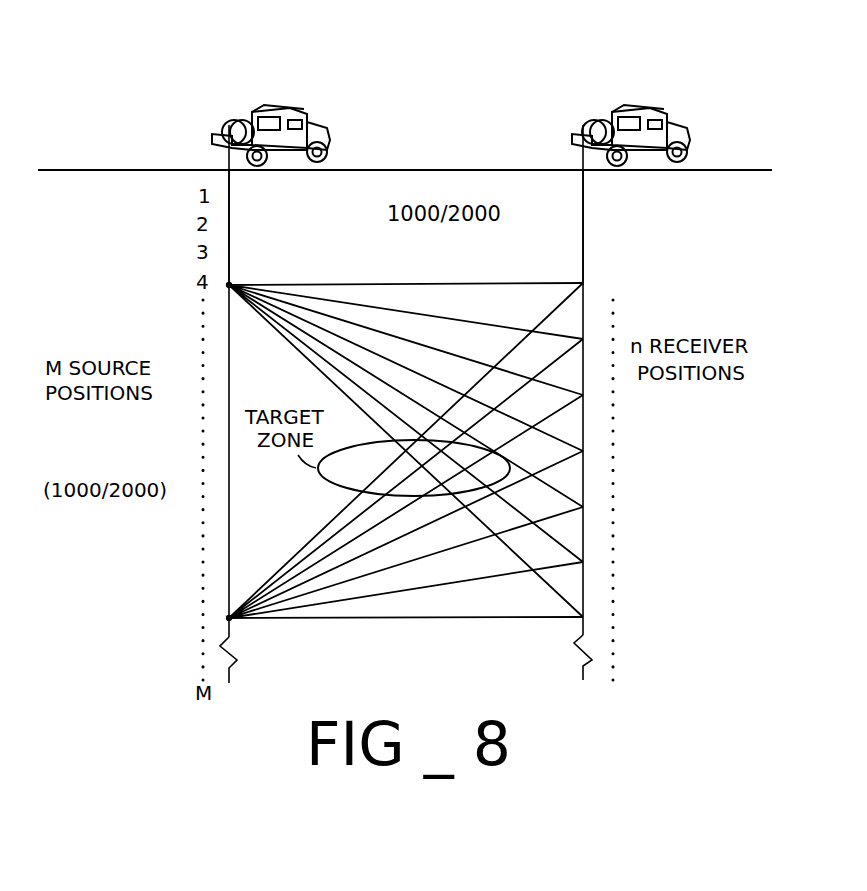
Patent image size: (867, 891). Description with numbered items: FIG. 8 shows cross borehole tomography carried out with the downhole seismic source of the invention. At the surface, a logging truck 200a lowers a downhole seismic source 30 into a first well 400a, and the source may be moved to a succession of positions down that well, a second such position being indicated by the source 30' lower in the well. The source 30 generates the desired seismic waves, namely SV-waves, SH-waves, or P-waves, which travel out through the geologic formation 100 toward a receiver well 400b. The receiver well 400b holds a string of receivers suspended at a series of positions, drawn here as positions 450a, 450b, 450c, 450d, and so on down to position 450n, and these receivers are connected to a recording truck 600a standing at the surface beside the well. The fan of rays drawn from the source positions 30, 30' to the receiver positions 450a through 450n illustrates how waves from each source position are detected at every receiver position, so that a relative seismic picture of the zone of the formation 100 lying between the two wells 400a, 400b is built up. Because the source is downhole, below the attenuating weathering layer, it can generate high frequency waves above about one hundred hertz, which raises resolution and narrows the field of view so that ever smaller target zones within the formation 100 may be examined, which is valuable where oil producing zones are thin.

The formation 100 is at (126, 240).
The logging truck 200a is at (305, 112).
The recording truck 600a is at (668, 114).
The first well 400a is at (229, 190).
The receiver well 400b is at (583, 231).
The receiver position a 450a is at (639, 193).
The receiver position b 450b is at (640, 219).
The receiver position c 450c is at (639, 247).
The receiver position d 450d is at (640, 278).
The receiver position n 450n is at (640, 692).
The downhole seismic source 30 is at (171, 303).
The source position 30' is at (174, 635).